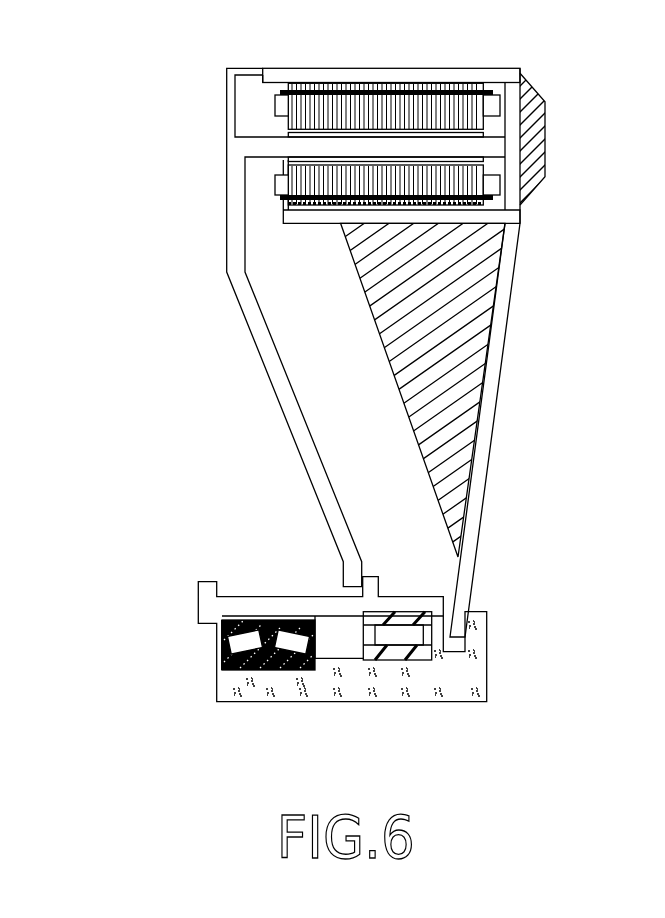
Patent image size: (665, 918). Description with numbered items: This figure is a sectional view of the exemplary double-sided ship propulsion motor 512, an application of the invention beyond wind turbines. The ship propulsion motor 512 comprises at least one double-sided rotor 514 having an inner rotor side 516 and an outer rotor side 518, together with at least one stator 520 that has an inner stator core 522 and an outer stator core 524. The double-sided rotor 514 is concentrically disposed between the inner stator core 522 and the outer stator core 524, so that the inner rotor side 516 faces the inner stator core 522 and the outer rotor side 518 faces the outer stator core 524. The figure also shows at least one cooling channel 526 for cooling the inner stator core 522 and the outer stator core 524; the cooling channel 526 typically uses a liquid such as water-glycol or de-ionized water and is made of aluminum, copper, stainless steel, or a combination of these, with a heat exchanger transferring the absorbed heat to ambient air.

The ship propulsion motor 512 is at (178, 92).
The double-sided rotor 514 is at (487, 147).
The inner rotor side 516 is at (505, 160).
The outer rotor side 518 is at (505, 136).
The stator 520 is at (290, 136).
The inner stator core 522 is at (277, 207).
The outer stator core 524 is at (276, 108).
The cooling channel 526 is at (510, 92).